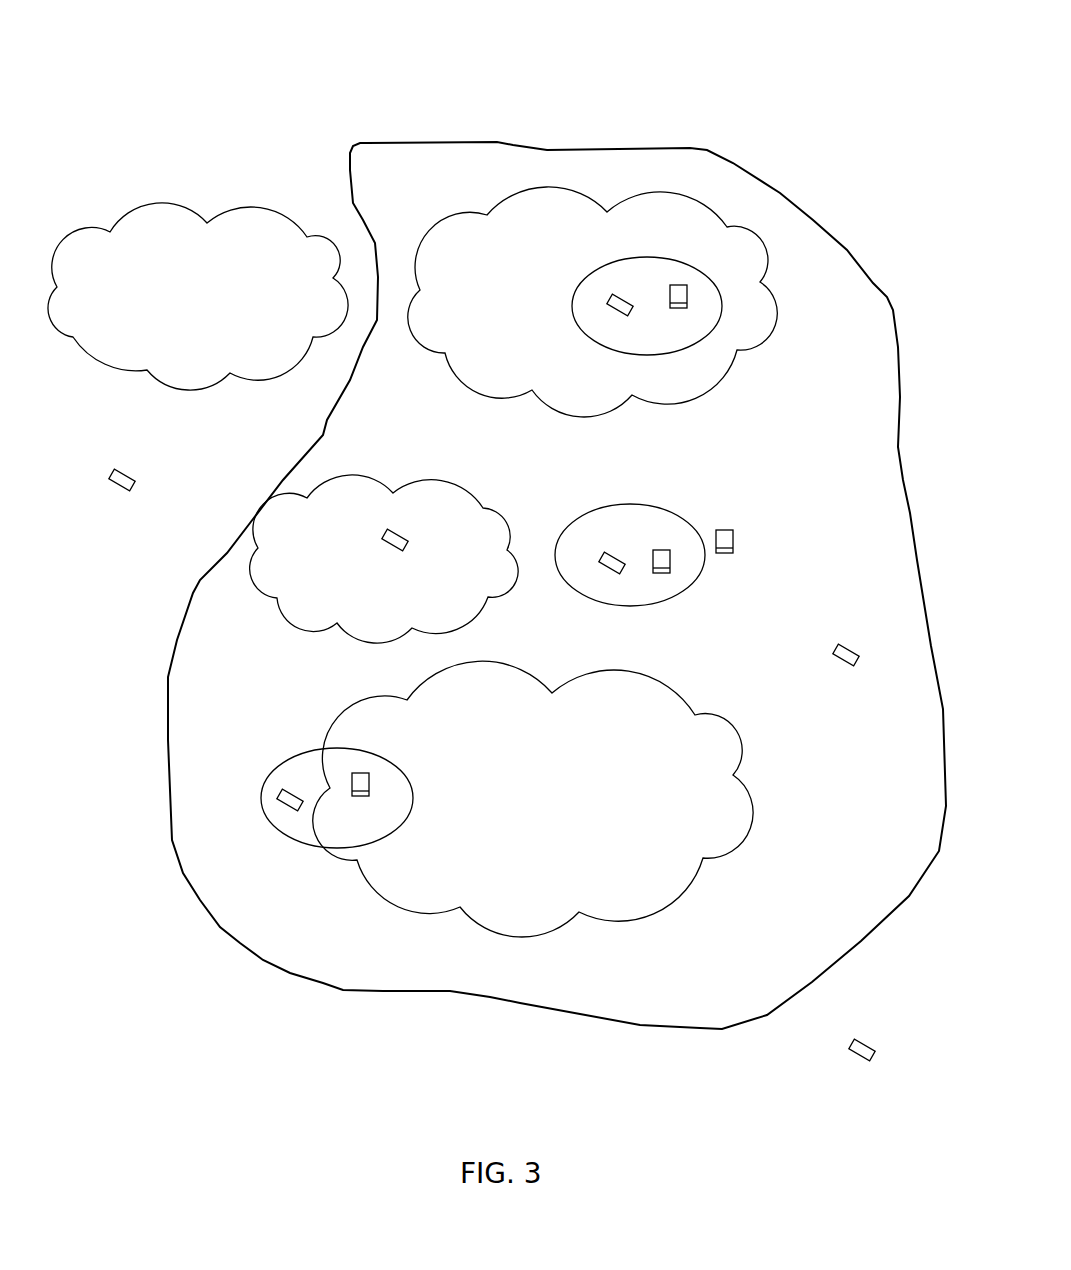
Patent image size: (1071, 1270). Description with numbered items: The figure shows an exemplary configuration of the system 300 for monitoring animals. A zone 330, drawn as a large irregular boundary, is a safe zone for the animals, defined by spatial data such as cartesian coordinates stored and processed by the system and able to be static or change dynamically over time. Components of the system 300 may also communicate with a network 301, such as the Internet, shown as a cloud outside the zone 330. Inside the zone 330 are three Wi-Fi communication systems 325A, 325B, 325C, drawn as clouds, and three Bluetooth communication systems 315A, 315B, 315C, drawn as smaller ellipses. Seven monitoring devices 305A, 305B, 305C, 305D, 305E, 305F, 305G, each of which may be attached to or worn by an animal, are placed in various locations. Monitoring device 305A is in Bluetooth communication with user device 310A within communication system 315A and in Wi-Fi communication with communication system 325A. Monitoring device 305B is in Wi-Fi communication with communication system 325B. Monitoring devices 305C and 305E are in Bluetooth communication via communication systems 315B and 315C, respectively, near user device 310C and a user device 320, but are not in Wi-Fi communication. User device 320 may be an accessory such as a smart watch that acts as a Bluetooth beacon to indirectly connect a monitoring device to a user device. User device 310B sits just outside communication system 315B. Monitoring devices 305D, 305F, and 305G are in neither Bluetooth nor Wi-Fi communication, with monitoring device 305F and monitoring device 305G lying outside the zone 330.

The system 300 is at (172, 54).
The zone 330 is at (371, 142).
The network 301 is at (117, 212).
The communication system 325A is at (456, 216).
The communication system 325B is at (287, 496).
The communication system 325C is at (347, 709).
The communication system 315A is at (599, 264).
The communication system 315B is at (571, 524).
The communication system 315C is at (289, 753).
The user device 310A is at (691, 290).
The user device 310B is at (735, 537).
The user device 310C is at (373, 774).
The user device 320 is at (652, 555).
The monitoring device 305A is at (611, 311).
The monitoring device 305B is at (391, 548).
The monitoring device 305C is at (606, 571).
The monitoring device 305D is at (841, 661).
The monitoring device 305E is at (284, 806).
The monitoring device 305F is at (855, 1056).
The monitoring device 305G is at (116, 484).